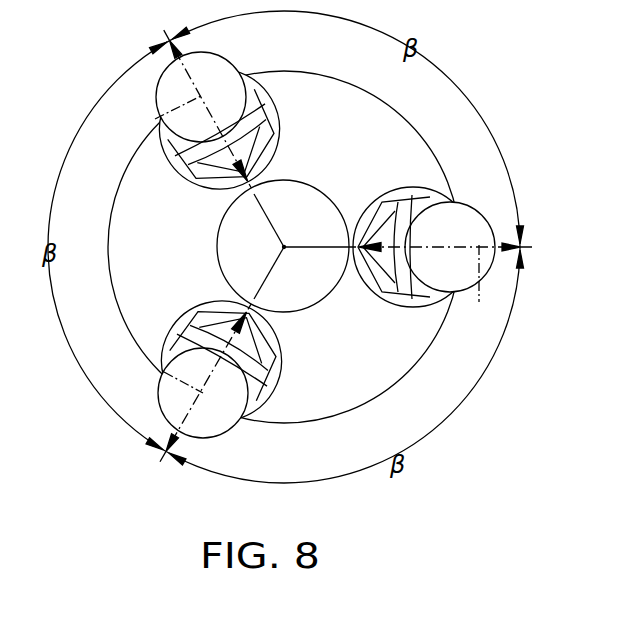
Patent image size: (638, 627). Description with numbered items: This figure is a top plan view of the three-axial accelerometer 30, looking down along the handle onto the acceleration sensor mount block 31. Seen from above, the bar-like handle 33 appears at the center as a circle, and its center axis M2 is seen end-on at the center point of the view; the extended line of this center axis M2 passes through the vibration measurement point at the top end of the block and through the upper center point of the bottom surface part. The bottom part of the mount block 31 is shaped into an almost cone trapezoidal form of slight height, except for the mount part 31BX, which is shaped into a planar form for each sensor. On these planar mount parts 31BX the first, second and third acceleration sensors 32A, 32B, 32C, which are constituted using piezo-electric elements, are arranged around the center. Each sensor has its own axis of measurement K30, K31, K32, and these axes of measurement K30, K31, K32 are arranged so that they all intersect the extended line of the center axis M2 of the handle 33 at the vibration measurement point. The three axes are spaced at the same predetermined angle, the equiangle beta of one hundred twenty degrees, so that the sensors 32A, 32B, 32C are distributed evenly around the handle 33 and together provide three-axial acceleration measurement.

The ball screw / rotation transmitting device 30 is at (584, 157).
The acceleration sensor mount block 31 is at (113, 200).
The mount part 31BX is at (268, 153).
The first acceleration sensor 32A is at (465, 215).
The second acceleration sensor 32B is at (206, 70).
The third acceleration sensor 32C is at (219, 426).
The handle 33 is at (317, 207).
The axis of measurement K30 is at (433, 293).
The axis of measurement K31 is at (155, 119).
The axis of measurement K32 is at (164, 372).
The center axis M2 is at (284, 247).